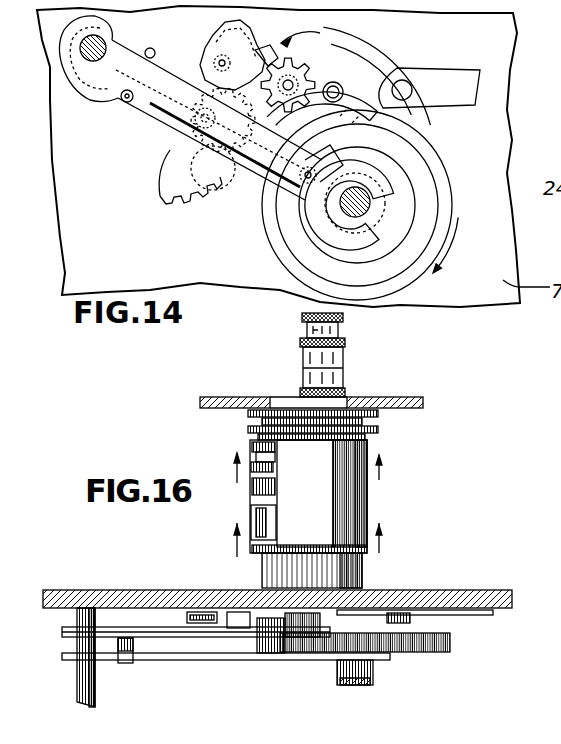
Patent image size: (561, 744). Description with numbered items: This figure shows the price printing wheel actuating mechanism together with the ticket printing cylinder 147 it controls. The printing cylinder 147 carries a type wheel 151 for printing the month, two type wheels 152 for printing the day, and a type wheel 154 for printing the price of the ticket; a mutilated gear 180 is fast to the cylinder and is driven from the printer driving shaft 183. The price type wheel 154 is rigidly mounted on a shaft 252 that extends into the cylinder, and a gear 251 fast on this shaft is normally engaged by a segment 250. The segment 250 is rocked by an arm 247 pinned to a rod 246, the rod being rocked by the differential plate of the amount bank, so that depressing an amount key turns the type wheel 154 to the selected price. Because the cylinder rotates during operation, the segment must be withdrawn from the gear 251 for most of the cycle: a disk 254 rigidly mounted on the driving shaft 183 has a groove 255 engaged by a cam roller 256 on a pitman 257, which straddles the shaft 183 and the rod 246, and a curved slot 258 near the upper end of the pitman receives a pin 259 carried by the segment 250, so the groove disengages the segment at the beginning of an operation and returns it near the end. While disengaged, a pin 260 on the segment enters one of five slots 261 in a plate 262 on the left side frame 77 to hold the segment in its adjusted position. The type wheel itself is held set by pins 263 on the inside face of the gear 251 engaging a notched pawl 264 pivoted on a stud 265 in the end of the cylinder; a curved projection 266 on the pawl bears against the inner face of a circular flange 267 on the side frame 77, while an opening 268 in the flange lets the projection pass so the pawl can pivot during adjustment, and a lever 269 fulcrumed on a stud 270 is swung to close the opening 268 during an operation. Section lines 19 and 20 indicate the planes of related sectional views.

In FIG. 14, the curved slot 258 is at (172, 32).
In FIG. 14, the rod 246 is at (88, 62).
In FIG. 16, the rod 246 is at (85, 693).
In FIG. 14, the pin 259 is at (120, 100).
In FIG. 16, the pin 259 is at (137, 650).
In FIG. 14, the arm 247 is at (172, 120).
In FIG. 16, the arm 247 is at (175, 637).
In FIG. 14, the plate 262 is at (240, 42).
In FIG. 16, the plate 262 is at (207, 620).
In FIG. 14, the slots 261 is at (216, 50).
In FIG. 14, the gear 251 is at (267, 63).
In FIG. 16, the gear 251 is at (287, 640).
In FIG. 14, the shaft 252 is at (222, 132).
In FIG. 14, the pin 260 is at (203, 177).
In FIG. 14, the segment 250 is at (163, 183).
In FIG. 16, the segment 250 is at (247, 633).
In FIG. 14, the curved projection 266 is at (300, 66).
In FIG. 14, the opening 268 is at (333, 37).
In FIG. 14, the stud 265 is at (345, 92).
In FIG. 14, the notched pawl 264 is at (350, 65).
In FIG. 14, the lever 269 is at (365, 72).
In FIG. 16, the lever 269 is at (478, 615).
In FIG. 14, the stud 270 is at (407, 98).
In FIG. 14, the disk 254 is at (432, 170).
In FIG. 16, the disk 254 is at (450, 645).
In FIG. 14, the circular flange 267 is at (336, 140).
In FIG. 14, the pins 263 is at (325, 157).
In FIG. 14, the printer driving shaft 183 is at (362, 214).
In FIG. 14, the pitman 257 is at (263, 190).
In FIG. 16, the pitman 257 is at (217, 660).
In FIG. 14, the cam roller 256 is at (267, 215).
In FIG. 14, the groove 255 is at (278, 238).
In FIG. 16, the mutilated gear 180 is at (375, 415).
In FIG. 16, the printing cylinder 147 is at (363, 505).
In FIG. 16, the type wheels 152 is at (258, 452).
In FIG. 16, the type wheel 151 is at (252, 487).
In FIG. 16, the type wheel 154 is at (253, 510).
In FIG. 16, the section line 20 is at (236, 472).
In FIG. 16, the section line 19 is at (236, 540).
In FIG. 16, the left side frame 77 is at (472, 597).